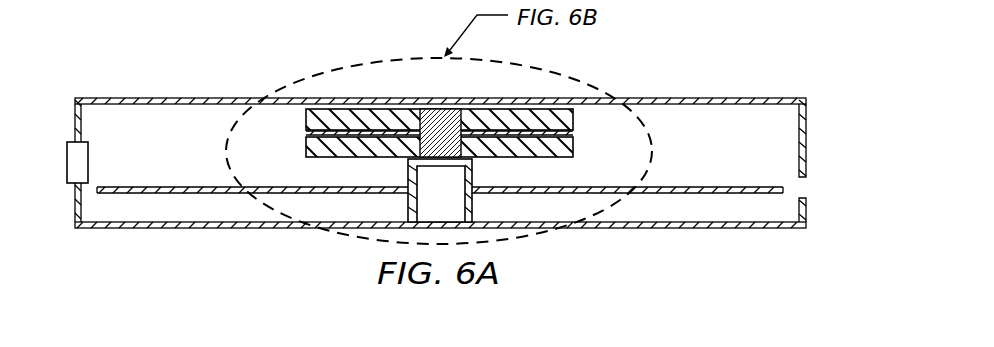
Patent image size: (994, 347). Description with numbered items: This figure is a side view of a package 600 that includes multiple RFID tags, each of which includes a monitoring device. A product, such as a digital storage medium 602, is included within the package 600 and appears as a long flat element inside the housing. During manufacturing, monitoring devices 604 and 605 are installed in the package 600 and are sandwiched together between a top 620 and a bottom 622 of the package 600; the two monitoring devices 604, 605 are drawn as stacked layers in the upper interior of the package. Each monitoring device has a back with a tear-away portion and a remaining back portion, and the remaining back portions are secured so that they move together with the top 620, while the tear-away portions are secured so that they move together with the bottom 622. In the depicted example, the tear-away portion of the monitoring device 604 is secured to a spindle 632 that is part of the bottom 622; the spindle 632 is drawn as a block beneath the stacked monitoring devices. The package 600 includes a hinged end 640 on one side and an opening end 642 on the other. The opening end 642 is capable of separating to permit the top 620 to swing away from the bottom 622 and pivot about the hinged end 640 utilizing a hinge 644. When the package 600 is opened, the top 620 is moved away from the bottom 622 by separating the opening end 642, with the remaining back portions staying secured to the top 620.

The package 600 is at (704, 53).
The digital storage medium 602 is at (712, 185).
The monitoring device 604 is at (307, 152).
The monitoring device 605 is at (574, 118).
The top 620 is at (166, 97).
The bottom 622 is at (172, 229).
The spindle 632 is at (458, 207).
The hinged end 640 is at (76, 120).
The opening end 642 is at (793, 189).
The hinge 644 is at (72, 186).